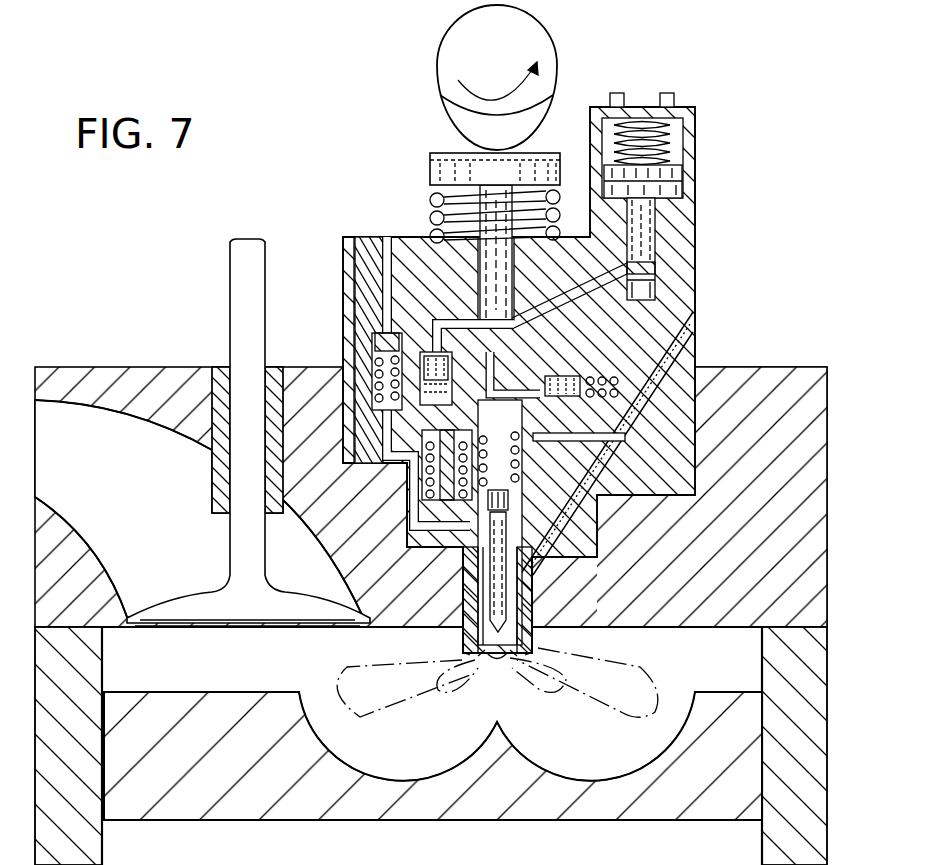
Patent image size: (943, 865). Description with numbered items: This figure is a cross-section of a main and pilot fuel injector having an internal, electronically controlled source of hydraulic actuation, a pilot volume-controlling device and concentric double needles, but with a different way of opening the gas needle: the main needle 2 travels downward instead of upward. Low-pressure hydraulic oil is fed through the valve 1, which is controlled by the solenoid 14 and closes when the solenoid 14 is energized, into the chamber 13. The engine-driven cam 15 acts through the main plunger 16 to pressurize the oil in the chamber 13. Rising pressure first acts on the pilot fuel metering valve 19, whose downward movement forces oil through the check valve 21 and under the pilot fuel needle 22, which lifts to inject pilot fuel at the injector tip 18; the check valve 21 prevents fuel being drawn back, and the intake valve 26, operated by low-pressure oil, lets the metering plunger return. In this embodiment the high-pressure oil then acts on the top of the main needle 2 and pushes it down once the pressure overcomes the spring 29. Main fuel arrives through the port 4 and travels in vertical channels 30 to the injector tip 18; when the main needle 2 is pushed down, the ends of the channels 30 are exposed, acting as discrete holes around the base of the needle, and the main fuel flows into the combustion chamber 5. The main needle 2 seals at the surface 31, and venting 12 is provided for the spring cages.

The valve 1 is at (672, 272).
The main needle 2 is at (523, 582).
The port 4 is at (697, 353).
The combustion chamber 5 is at (605, 751).
The venting 12 is at (695, 297).
The chamber 13 is at (497, 338).
The solenoid 14 is at (680, 137).
The engine-driven cam 15 is at (540, 30).
The main plunger 16 is at (497, 278).
The injector tip 18 is at (462, 672).
The pilot fuel metering valve 19 is at (430, 352).
The check valve 21 is at (423, 466).
The pilot fuel needle 22 is at (495, 575).
The intake valve 26 is at (380, 348).
The spring 29 is at (533, 452).
The vertical channels 30 is at (455, 636).
The surface 31 is at (557, 637).